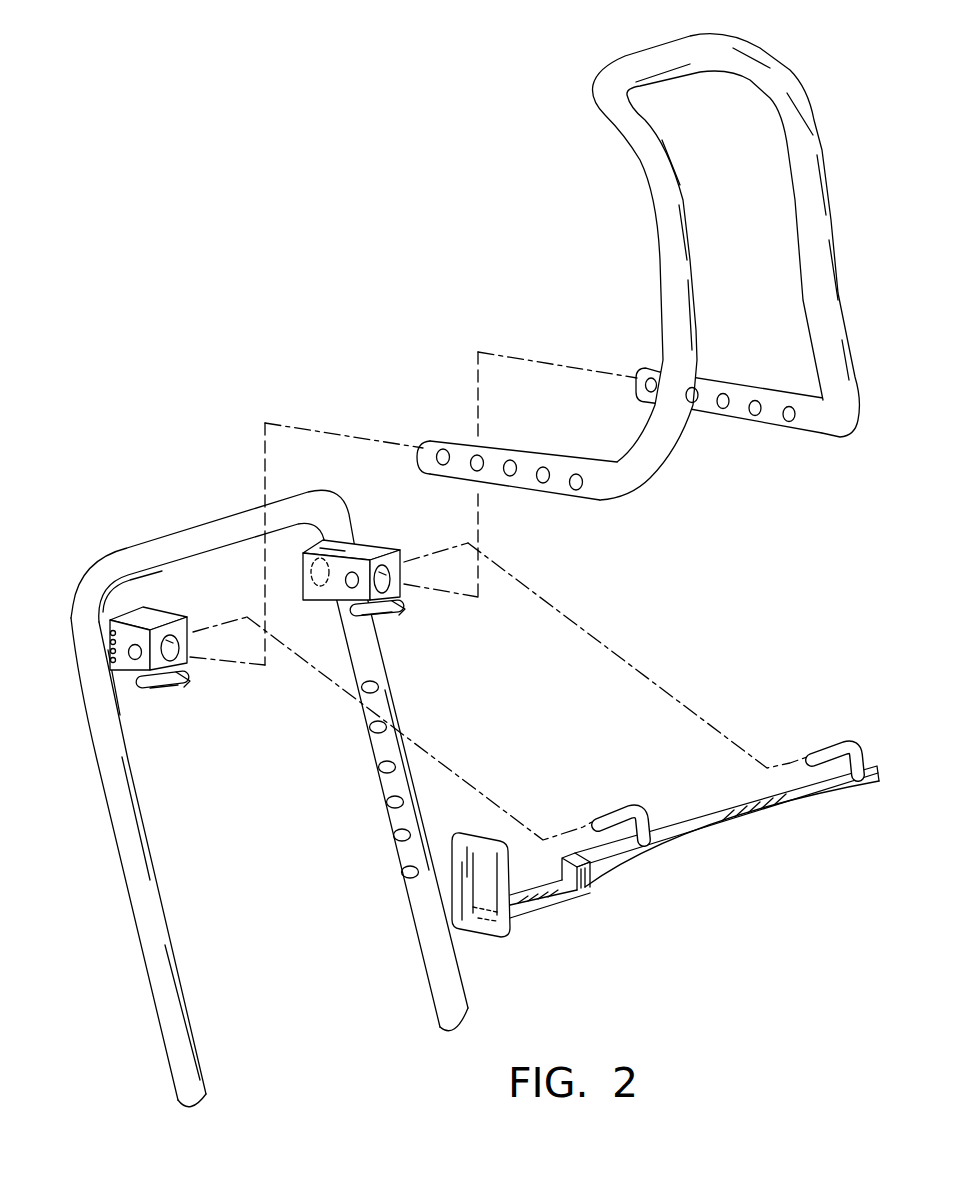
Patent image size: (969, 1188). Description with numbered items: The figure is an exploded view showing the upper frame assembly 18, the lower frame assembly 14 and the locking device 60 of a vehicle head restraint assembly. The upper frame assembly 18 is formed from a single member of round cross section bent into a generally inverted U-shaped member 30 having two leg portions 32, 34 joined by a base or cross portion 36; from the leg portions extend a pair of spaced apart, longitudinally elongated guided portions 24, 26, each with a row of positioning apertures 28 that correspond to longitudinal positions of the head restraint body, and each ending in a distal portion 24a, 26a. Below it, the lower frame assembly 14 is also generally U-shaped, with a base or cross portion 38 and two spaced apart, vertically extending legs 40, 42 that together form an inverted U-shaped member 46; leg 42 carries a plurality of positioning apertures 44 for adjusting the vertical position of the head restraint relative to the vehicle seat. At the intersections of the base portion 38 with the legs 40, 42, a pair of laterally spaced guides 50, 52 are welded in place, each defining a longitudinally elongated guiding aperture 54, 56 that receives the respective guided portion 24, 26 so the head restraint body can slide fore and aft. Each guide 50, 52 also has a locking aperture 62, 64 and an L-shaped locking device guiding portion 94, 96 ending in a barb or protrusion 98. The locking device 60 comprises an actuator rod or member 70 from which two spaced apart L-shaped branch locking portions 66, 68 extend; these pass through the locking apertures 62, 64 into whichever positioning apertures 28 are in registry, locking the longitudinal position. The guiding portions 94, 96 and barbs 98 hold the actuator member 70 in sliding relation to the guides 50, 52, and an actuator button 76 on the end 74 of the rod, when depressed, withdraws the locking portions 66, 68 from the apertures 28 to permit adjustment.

The lower frame assembly 14 is at (283, 778).
The upper frame assembly 18 is at (712, 250).
The guided portion 24 is at (485, 442).
The distal portion 24a is at (431, 447).
The guided portion 26 is at (697, 370).
The distal portion 26a is at (648, 373).
The positioning apertures 28 is at (475, 458).
The inverted U-shaped member 30 is at (765, 75).
The leg portion 32 is at (673, 287).
The leg portion 34 is at (818, 250).
The base or cross portion 36 is at (647, 58).
The base or cross portion 38 is at (200, 540).
The leg 40 is at (142, 862).
The leg 42 is at (411, 789).
The positioning apertures 44 is at (396, 838).
The inverted U-shaped member 46 is at (128, 745).
The guide 50 is at (138, 641).
The guide 52 is at (368, 573).
The guiding aperture 54 is at (174, 645).
The guiding aperture 56 is at (384, 570).
The locking device 60 is at (694, 838).
The locking aperture 62 is at (134, 655).
The locking aperture 64 is at (350, 586).
The locking portion 66 is at (614, 815).
The locking portion 68 is at (826, 757).
The actuator rod or member 70 is at (698, 818).
The end of the actuator rod 74 is at (518, 915).
The actuator button 76 is at (480, 855).
The locking device guiding portion 94 is at (152, 690).
The locking device guiding portion 96 is at (385, 655).
The barb or protrusion 98 is at (187, 686).